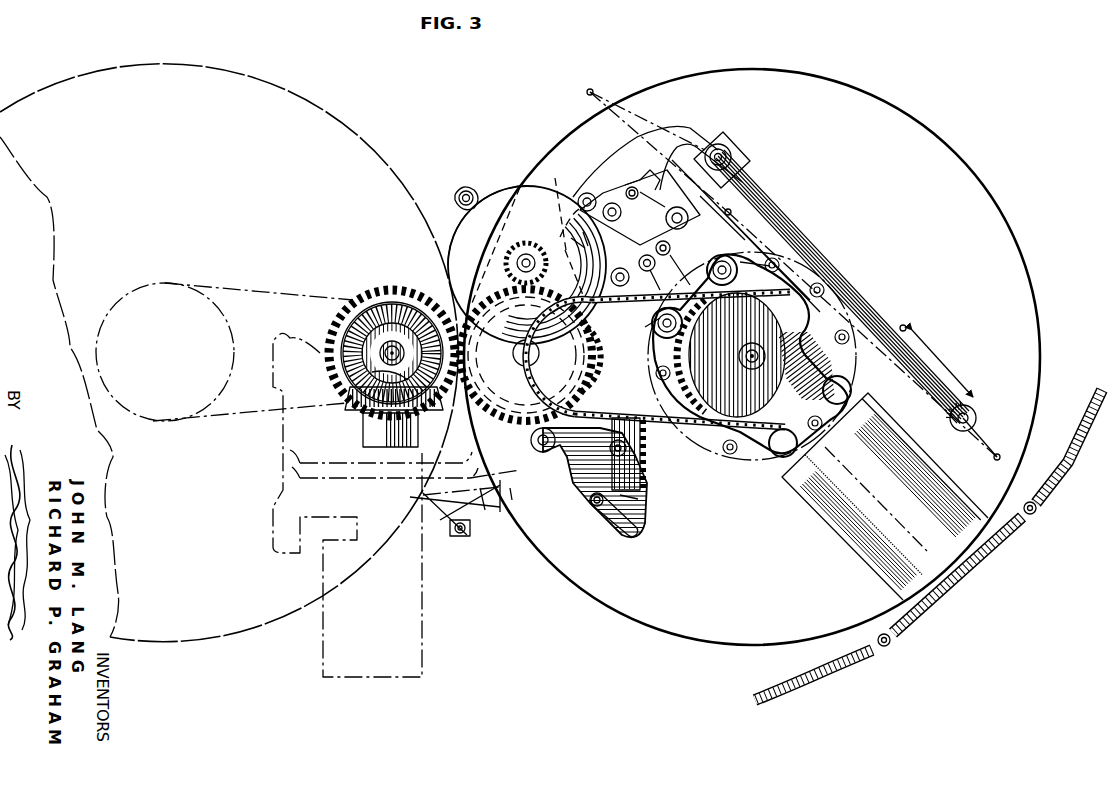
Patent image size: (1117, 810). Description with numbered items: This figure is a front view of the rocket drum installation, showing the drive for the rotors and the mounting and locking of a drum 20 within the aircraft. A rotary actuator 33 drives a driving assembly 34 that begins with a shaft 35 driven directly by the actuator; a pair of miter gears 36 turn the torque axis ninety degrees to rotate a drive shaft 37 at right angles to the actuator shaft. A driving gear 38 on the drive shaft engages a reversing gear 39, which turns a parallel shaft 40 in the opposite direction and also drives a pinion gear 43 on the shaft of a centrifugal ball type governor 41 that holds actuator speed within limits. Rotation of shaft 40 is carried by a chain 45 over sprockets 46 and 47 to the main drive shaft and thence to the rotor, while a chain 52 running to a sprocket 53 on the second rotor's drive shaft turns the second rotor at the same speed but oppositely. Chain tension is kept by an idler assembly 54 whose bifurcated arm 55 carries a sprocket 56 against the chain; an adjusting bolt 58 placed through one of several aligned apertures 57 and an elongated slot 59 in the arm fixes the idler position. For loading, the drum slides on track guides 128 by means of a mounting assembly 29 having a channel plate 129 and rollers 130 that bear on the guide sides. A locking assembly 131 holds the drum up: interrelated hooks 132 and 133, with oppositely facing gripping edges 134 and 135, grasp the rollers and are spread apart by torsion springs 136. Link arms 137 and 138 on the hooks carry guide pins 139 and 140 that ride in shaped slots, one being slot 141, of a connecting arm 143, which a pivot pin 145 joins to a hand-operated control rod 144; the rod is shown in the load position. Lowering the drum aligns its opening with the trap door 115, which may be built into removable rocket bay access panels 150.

The drum 20 is at (290, 85).
The mounting assembly 29 is at (770, 262).
The rotary actuator 33 is at (362, 440).
The driving assembly 34 is at (452, 225).
The shaft 35 is at (380, 380).
The miter gears 36 is at (345, 403).
The drive shaft 37 is at (388, 351).
The driving gear 38 is at (401, 290).
The reversing gear 39 is at (517, 415).
The shaft 40 is at (526, 362).
The centrifugal ball type governor 41 is at (500, 205).
The pinion gear 43 is at (531, 222).
The chain 45 is at (602, 303).
The sprocket 46 is at (592, 372).
The sprocket 47 is at (688, 381).
The chain 52 is at (260, 292).
The sprocket 53 is at (232, 330).
The idler assembly 54 is at (563, 468).
The bifurcated arm 55 is at (548, 452).
The sprocket 56 is at (648, 462).
The apertures 57 is at (640, 496).
The adjusting bolt 58 is at (590, 503).
The elongated slot 59 is at (616, 520).
The trap door 115 is at (975, 584).
The track guides 128 is at (876, 500).
The channel plate 129 is at (846, 372).
The rollers 130 is at (745, 262).
The locking assembly 131 is at (716, 143).
The hook 132 is at (712, 253).
The hook 133 is at (655, 325).
The gripping edge 134 is at (748, 252).
The gripping edge 135 is at (652, 335).
The torsion springs 136 is at (712, 271).
The link arm 137 is at (690, 200).
The link arm 138 is at (616, 219).
The guide pin 139 is at (636, 187).
The guide pin 140 is at (572, 238).
The slot 141 is at (662, 193).
The connecting arm 143 is at (575, 195).
The control rod 144 is at (838, 287).
The pivot pin 145 is at (728, 147).
The rocket bay access panels 150 is at (872, 665).